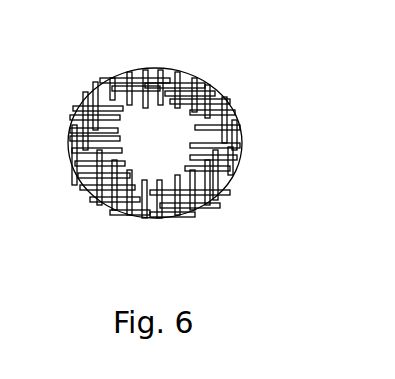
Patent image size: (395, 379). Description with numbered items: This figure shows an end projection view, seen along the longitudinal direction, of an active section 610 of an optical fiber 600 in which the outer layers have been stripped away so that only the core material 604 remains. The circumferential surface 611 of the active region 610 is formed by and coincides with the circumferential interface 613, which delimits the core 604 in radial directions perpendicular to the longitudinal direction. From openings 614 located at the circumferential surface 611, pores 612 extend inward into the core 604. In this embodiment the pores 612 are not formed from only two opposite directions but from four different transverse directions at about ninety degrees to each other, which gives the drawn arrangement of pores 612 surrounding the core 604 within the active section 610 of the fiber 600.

The optical fiber 600 is at (195, 220).
The core material 604 is at (155, 140).
The active section 610 is at (210, 191).
The circumferential surface 611 is at (100, 83).
The pores 612 is at (153, 77).
The circumferential interface 613 is at (93, 90).
The openings 614 is at (158, 66).